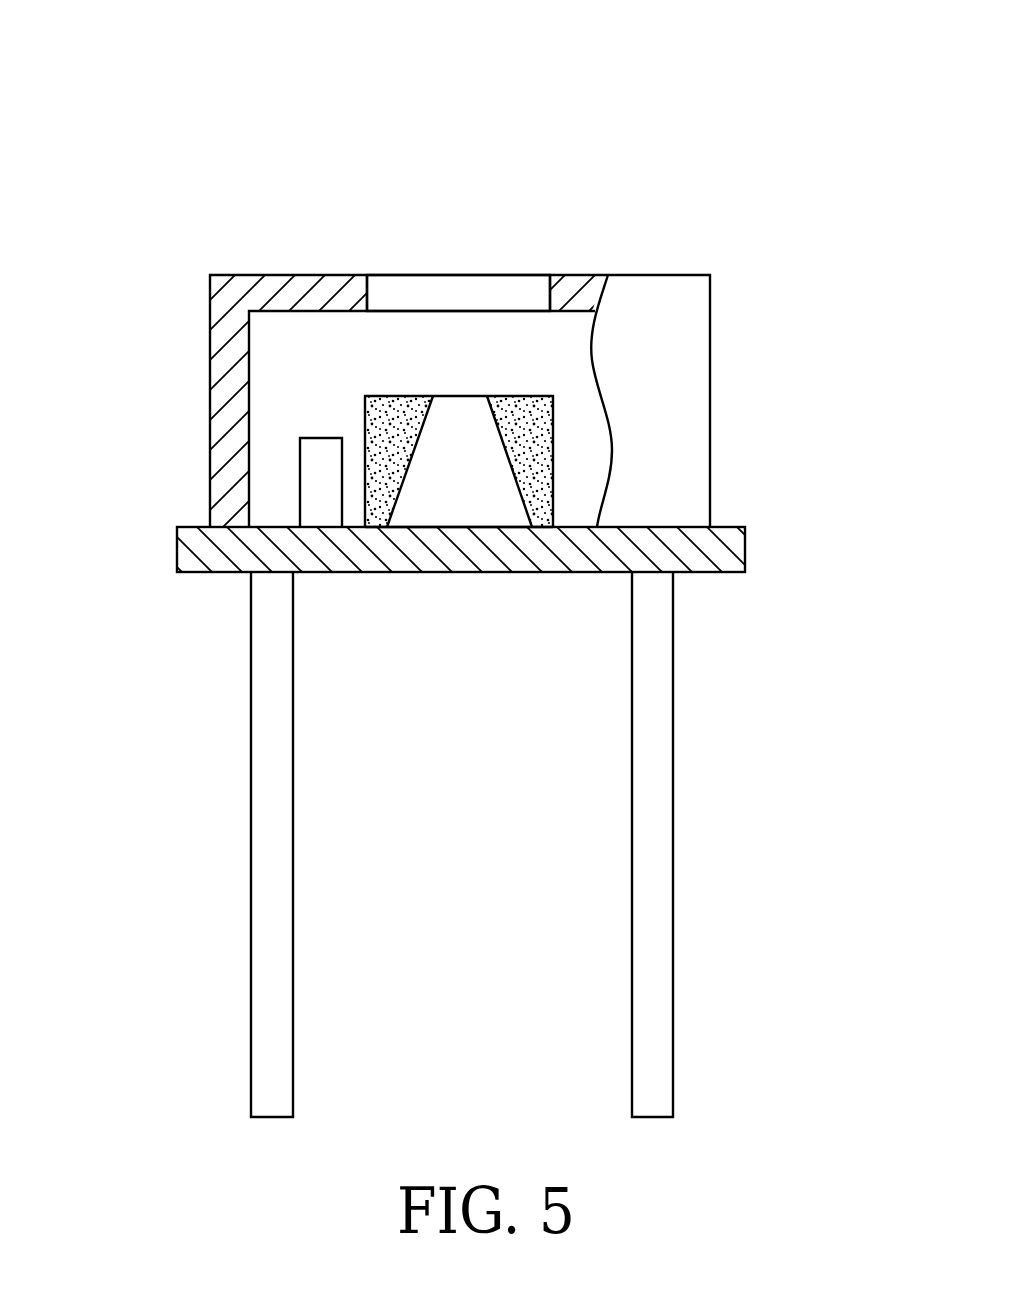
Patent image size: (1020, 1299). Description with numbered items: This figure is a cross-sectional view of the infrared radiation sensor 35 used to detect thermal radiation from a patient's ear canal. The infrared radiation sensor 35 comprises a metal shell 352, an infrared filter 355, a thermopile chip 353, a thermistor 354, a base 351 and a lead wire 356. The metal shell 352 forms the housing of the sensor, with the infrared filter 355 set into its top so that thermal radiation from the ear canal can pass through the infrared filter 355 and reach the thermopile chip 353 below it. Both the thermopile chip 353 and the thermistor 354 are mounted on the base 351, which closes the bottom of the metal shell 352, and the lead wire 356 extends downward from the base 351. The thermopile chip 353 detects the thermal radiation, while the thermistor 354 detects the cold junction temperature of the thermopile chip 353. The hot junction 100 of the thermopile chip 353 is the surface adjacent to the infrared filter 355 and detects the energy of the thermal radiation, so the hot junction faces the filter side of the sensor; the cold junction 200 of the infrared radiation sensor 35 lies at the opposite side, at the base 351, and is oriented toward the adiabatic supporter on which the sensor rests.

The infrared radiation sensor 35 is at (672, 147).
The hot junction 100 is at (468, 385).
The cold junction 200 is at (460, 532).
The base 351 is at (713, 555).
The metal shell 352 is at (228, 422).
The thermopile chip 353 is at (513, 455).
The thermistor 354 is at (320, 492).
The infrared filter 355 is at (458, 292).
The lead wire 356 is at (660, 775).